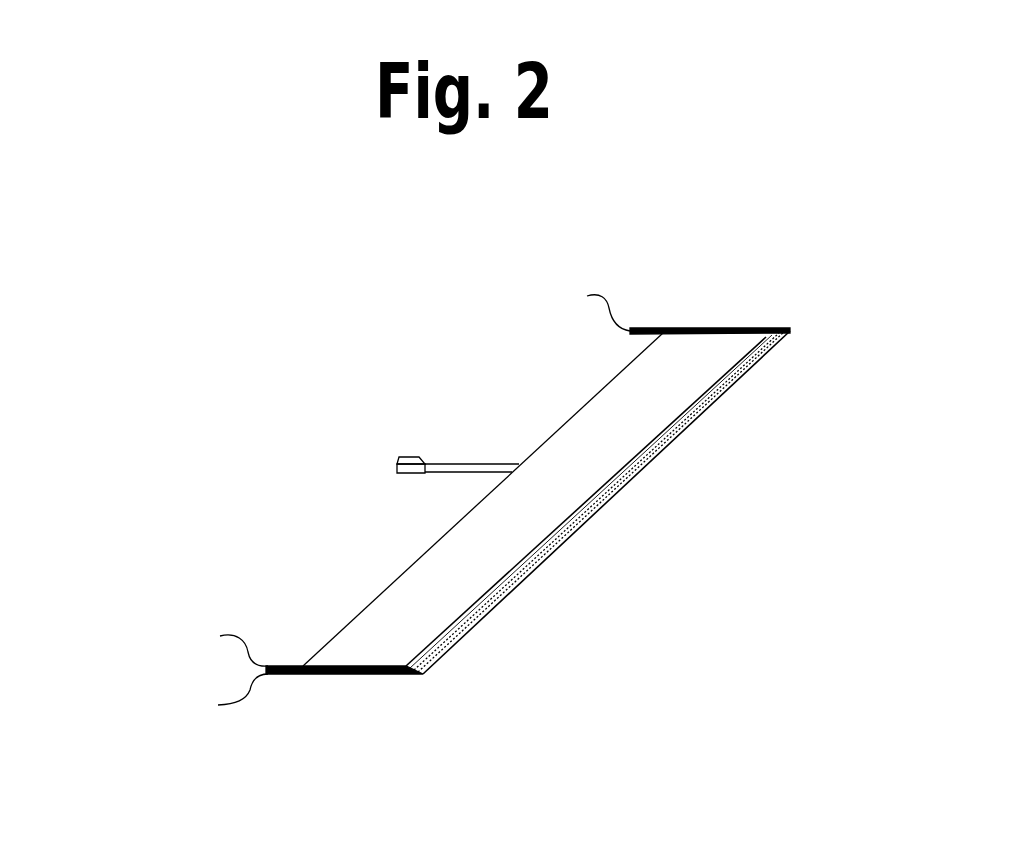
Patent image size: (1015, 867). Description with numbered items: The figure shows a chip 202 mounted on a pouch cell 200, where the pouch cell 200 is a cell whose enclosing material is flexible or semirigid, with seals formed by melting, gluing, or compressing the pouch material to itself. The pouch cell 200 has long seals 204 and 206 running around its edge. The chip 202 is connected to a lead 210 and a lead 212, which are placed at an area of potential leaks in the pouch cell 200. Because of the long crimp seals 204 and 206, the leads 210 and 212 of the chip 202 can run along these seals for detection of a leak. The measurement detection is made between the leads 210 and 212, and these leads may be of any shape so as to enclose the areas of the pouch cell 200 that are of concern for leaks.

The pouch cell 200 is at (876, 170).
The chip 202 is at (392, 453).
The seal 204 is at (660, 324).
The seal 206 is at (310, 685).
The lead 210 is at (510, 604).
The lead 212 is at (663, 455).